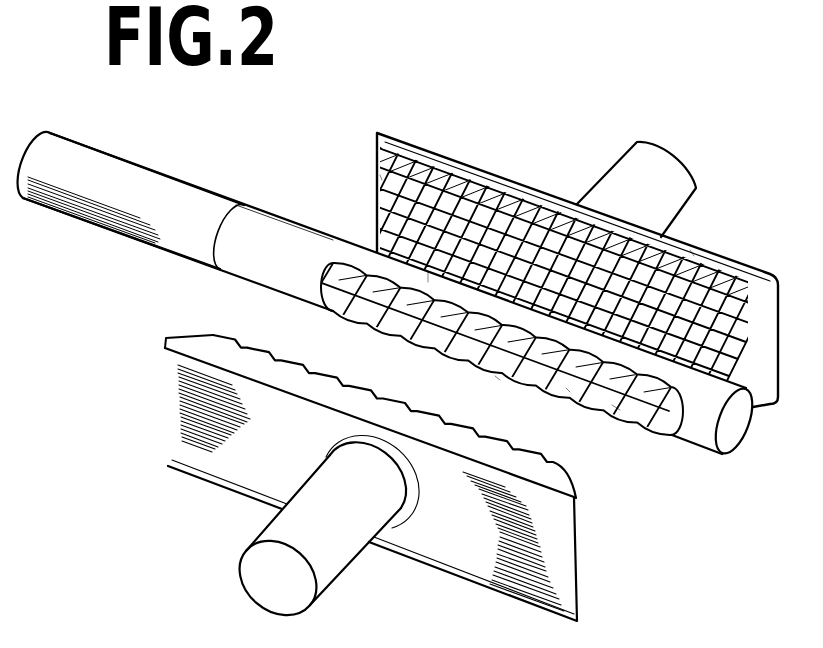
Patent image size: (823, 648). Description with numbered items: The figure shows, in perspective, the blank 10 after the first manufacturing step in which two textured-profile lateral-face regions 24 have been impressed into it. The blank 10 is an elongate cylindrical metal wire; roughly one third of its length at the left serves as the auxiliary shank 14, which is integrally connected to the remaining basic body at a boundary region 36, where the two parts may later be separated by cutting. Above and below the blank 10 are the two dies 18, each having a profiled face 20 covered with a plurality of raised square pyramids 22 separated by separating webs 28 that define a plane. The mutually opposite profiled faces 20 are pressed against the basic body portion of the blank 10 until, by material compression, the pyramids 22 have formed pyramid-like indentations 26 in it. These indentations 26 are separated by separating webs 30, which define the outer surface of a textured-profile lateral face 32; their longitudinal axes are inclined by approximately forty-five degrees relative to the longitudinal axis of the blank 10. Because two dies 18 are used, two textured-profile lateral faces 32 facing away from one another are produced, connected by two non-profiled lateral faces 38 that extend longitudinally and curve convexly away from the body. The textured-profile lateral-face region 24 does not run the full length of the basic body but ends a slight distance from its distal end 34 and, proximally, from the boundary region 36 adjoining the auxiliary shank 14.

The blank 10 is at (264, 190).
The auxiliary shank 14 is at (155, 175).
The die 18 is at (590, 168).
The profiled face 20 is at (392, 183).
The raised square pyramid 22 is at (486, 181).
The textured-profile lateral-face region 24 is at (368, 327).
The pyramid-like indentation 26 is at (568, 390).
The separating web 28 is at (690, 251).
The separating web 30 is at (499, 380).
The textured-profile lateral face 32 is at (625, 422).
The distal end 34 is at (712, 437).
The boundary region 36 is at (210, 246).
The non-profiled lateral face 38 is at (428, 282).